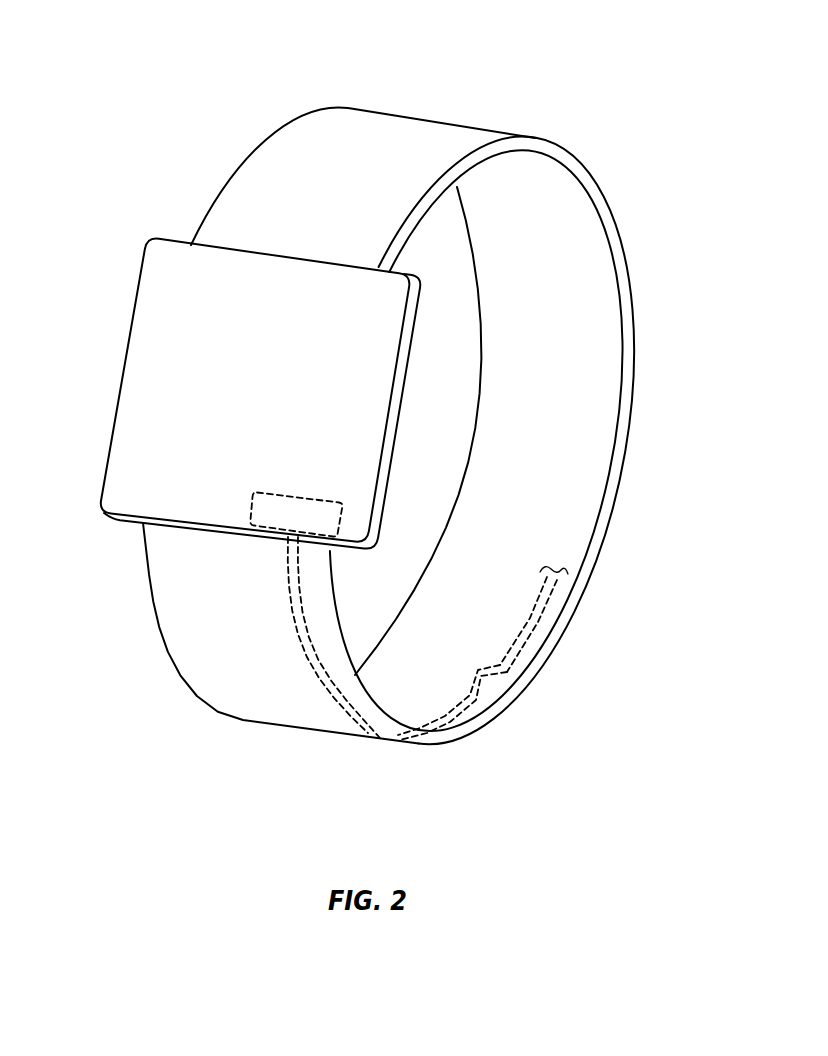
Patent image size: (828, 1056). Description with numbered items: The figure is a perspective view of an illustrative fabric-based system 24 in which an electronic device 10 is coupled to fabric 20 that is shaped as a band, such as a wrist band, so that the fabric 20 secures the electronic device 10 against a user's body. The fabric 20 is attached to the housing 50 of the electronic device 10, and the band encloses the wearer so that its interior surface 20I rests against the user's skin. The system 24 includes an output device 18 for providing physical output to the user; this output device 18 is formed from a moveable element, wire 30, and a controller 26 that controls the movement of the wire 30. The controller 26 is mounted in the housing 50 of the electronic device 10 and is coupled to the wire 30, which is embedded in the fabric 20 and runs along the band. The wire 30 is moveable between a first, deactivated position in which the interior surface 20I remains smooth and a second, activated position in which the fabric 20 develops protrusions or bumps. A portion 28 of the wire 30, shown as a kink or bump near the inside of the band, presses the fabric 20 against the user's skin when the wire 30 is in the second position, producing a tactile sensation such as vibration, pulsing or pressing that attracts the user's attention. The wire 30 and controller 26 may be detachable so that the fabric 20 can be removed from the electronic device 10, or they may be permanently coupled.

The fabric-based system 24 is at (98, 84).
The electronic device 10 is at (128, 342).
The housing 50 is at (108, 517).
The fabric 20 is at (628, 382).
The interior surface 20I is at (585, 238).
The controller 26 is at (280, 513).
The wire 30 is at (313, 677).
The output device 18 is at (530, 623).
The portion 28 is at (478, 668).